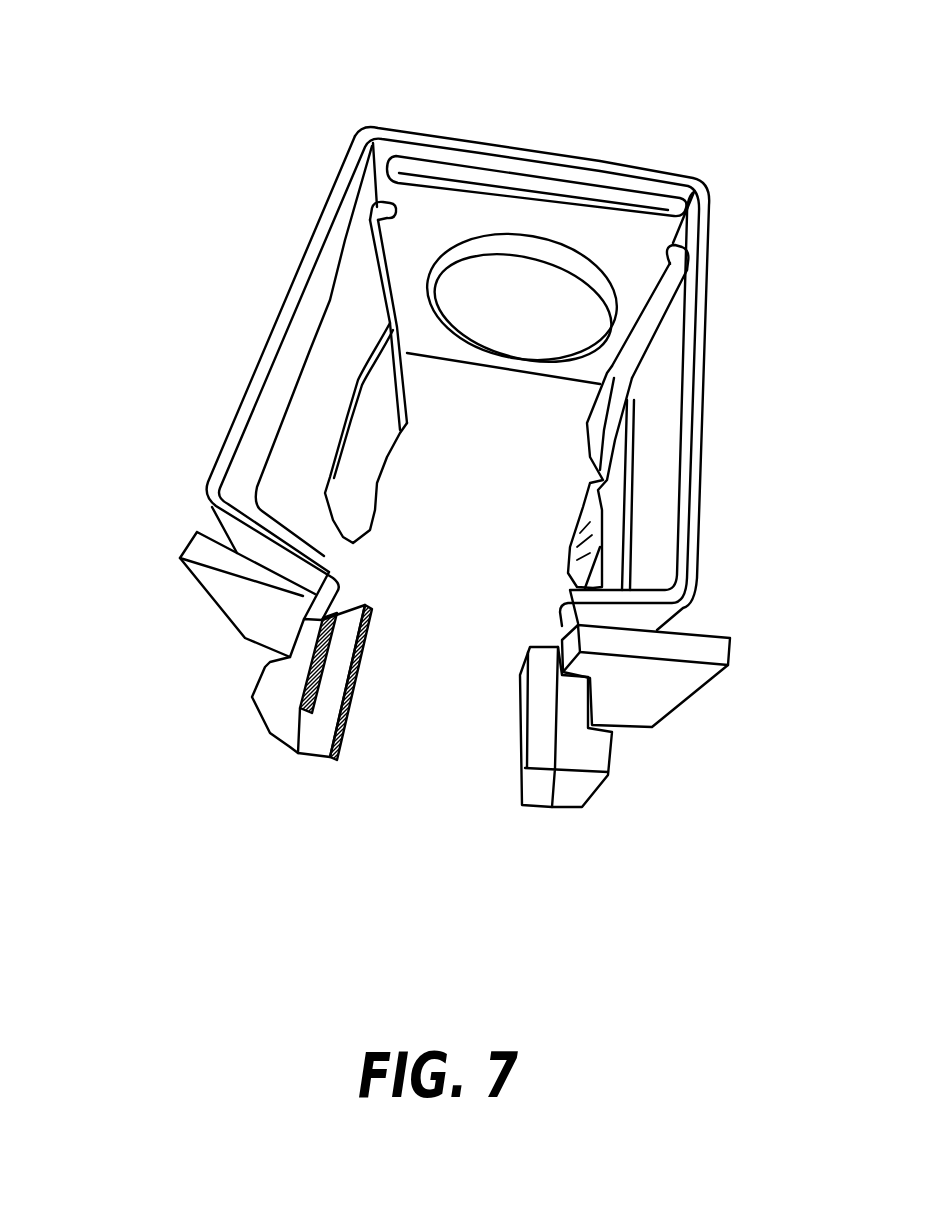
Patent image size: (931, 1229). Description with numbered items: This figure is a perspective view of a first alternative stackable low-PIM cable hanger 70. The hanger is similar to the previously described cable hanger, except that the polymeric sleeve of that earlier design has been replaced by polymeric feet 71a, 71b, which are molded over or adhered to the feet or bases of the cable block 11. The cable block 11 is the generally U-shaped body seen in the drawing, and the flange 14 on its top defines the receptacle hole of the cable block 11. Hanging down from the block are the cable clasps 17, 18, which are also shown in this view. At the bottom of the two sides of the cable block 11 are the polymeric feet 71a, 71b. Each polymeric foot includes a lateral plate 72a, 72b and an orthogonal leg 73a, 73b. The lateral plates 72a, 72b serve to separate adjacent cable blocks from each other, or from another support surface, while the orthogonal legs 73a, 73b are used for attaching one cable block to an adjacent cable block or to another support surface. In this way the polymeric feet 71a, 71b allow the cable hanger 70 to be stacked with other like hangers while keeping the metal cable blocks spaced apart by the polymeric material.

The stackable low-PIM cable hanger 70 is at (763, 82).
The cable block 11 is at (289, 120).
The flange 14 is at (516, 345).
The cable clasp 17 is at (383, 423).
The cable clasp 18 is at (600, 440).
The polymeric foot 71a is at (143, 713).
The polymeric foot 71b is at (727, 783).
The lateral plate 72a is at (238, 602).
The lateral plate 72b is at (672, 682).
The orthogonal leg 73a is at (285, 718).
The orthogonal leg 73b is at (575, 790).